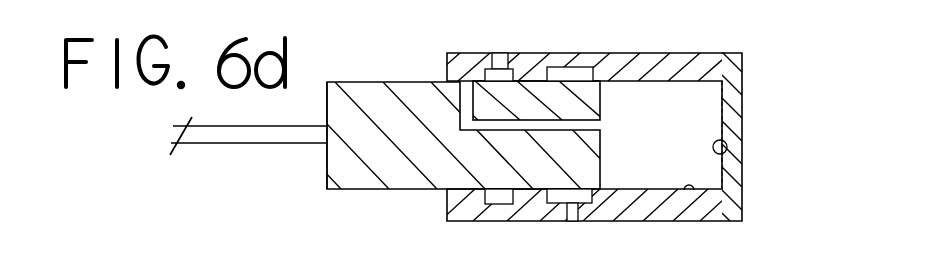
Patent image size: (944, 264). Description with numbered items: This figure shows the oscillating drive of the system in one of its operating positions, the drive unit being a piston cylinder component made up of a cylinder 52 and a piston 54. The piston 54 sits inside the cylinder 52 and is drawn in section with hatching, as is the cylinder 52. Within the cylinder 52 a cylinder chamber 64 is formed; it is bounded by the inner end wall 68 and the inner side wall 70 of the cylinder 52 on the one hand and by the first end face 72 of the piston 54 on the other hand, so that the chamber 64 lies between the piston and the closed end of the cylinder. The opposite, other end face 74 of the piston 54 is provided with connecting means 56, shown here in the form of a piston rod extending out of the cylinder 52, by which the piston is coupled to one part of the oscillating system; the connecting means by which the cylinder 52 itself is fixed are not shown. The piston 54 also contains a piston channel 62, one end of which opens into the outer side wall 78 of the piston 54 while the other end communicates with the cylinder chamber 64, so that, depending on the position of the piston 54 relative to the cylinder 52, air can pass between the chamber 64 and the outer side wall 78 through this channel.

The cylinder 52 is at (677, 60).
The piston 54 is at (333, 167).
The connecting means 56 is at (257, 145).
The piston channel 62 is at (458, 122).
The cylinder chamber 64 is at (690, 161).
The inner end wall 68 is at (727, 148).
The inner side wall 70 is at (688, 190).
The first end face 72 is at (600, 163).
The other end face 74 is at (326, 103).
The outer side wall 78 is at (408, 92).